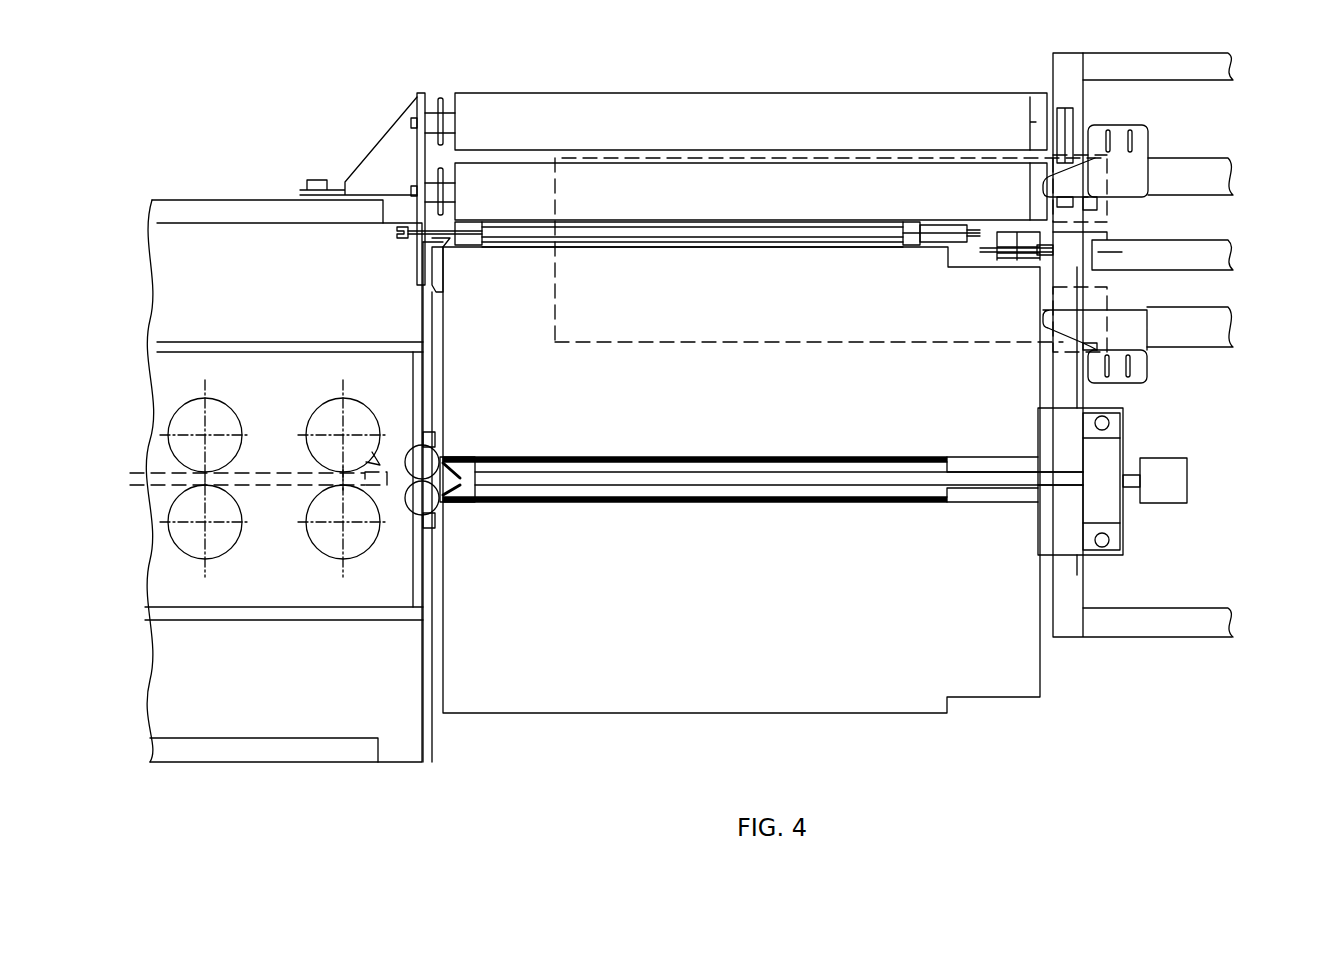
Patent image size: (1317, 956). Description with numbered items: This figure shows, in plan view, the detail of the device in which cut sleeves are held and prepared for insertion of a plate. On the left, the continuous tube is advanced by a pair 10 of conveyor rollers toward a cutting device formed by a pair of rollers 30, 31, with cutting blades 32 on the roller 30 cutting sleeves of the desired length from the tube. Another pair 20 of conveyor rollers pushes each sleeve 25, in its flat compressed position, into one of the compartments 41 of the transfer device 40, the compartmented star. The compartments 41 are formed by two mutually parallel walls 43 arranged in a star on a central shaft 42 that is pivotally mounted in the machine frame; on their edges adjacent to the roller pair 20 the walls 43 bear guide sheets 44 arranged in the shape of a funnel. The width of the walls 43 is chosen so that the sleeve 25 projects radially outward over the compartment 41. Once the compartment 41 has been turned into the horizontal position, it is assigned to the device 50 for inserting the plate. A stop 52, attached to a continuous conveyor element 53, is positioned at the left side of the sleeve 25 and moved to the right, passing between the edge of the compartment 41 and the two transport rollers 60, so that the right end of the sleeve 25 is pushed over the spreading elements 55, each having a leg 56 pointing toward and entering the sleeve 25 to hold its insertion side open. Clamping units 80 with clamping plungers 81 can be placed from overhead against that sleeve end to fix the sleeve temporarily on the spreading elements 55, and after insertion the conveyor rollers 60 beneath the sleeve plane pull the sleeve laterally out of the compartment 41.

The pair of conveyor rollers 10 is at (225, 425).
The pair of conveyor rollers 20 is at (425, 458).
The sleeve 25 is at (695, 343).
The roller 30 is at (360, 418).
The roller 31 is at (333, 538).
The cutting blades 32 is at (312, 408).
The transfer device 40 is at (573, 648).
The compartments 41 is at (630, 483).
The shaft 42 is at (1055, 482).
The walls 43 is at (930, 482).
The guide sheets 44 is at (450, 465).
The device for inserting the plate 50 is at (1207, 228).
The stop 52 is at (400, 230).
The continuous conveyor element 53 is at (423, 258).
The spreading elements 55 is at (1140, 148).
The leg 56 is at (1060, 183).
The conveyor rollers 60 is at (527, 200).
The clamping units 80 is at (1127, 165).
The clamping plungers 81 is at (1093, 215).